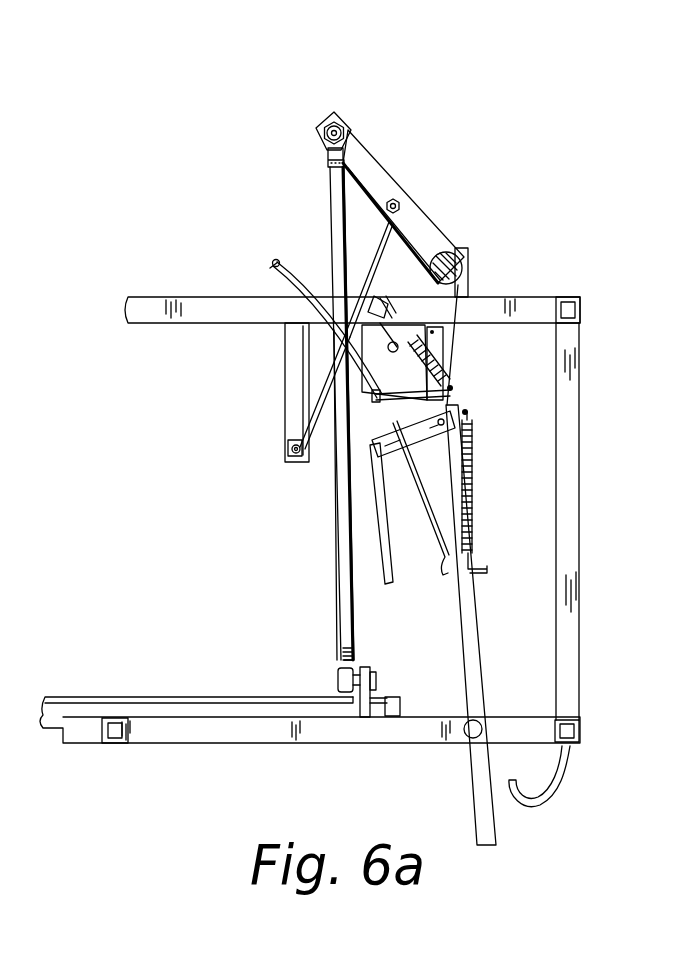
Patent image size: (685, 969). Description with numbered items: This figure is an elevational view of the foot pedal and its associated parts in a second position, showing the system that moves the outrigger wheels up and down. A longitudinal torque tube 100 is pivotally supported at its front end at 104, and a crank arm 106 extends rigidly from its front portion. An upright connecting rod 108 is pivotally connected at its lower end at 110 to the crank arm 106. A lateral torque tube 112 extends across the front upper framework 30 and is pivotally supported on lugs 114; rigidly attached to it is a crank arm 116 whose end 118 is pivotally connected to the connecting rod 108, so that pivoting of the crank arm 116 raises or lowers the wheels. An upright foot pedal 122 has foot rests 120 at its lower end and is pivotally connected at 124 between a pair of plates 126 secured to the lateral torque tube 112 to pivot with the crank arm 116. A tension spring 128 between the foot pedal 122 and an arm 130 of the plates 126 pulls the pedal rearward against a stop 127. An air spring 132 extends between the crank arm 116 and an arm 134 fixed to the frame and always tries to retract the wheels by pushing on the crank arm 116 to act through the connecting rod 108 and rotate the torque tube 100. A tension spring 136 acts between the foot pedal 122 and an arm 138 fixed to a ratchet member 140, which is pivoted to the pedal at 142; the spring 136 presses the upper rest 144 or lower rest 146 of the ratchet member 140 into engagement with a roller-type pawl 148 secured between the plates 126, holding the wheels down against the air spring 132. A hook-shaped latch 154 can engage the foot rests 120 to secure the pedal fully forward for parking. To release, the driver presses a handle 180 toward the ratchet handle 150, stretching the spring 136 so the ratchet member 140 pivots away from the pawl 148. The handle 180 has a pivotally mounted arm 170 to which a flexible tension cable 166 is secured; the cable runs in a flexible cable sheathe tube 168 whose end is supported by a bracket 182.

The framework 30 is at (582, 300).
The longitudinal torque tube 100 is at (270, 698).
The front end pivot support 104 is at (388, 694).
The crank arm 106 is at (365, 688).
The connecting rod 108 is at (342, 517).
The lower pivot connection 110 is at (340, 680).
The lateral torque tube 112 is at (463, 265).
The lug 114 is at (470, 272).
The crank arm 116 is at (373, 163).
The crank arm end pivot 118 is at (349, 131).
The foot rest 120 is at (483, 720).
The foot pedal 122 is at (470, 642).
The foot pedal pivot 124 is at (579, 316).
The plates 126 is at (405, 216).
The stop 127 is at (118, 743).
The tension spring 128 is at (400, 317).
The arm 130 is at (362, 262).
The air spring 132 is at (310, 388).
The arm 134 is at (290, 348).
The tension spring 136 is at (476, 508).
The arm 138 is at (468, 412).
The ratchet member 140 is at (302, 413).
The pivot pin 142 is at (455, 433).
The upper rest 144 is at (466, 312).
The lower rest 146 is at (447, 363).
The roller-type pawl 148 is at (330, 297).
The handle 150 is at (474, 548).
The latch 154 is at (550, 790).
The flexible tension cable 166 is at (340, 445).
The flexible cable sheathe tube 168 is at (273, 268).
The arm 170 is at (470, 452).
The handle 180 is at (392, 585).
The bracket 182 is at (454, 390).